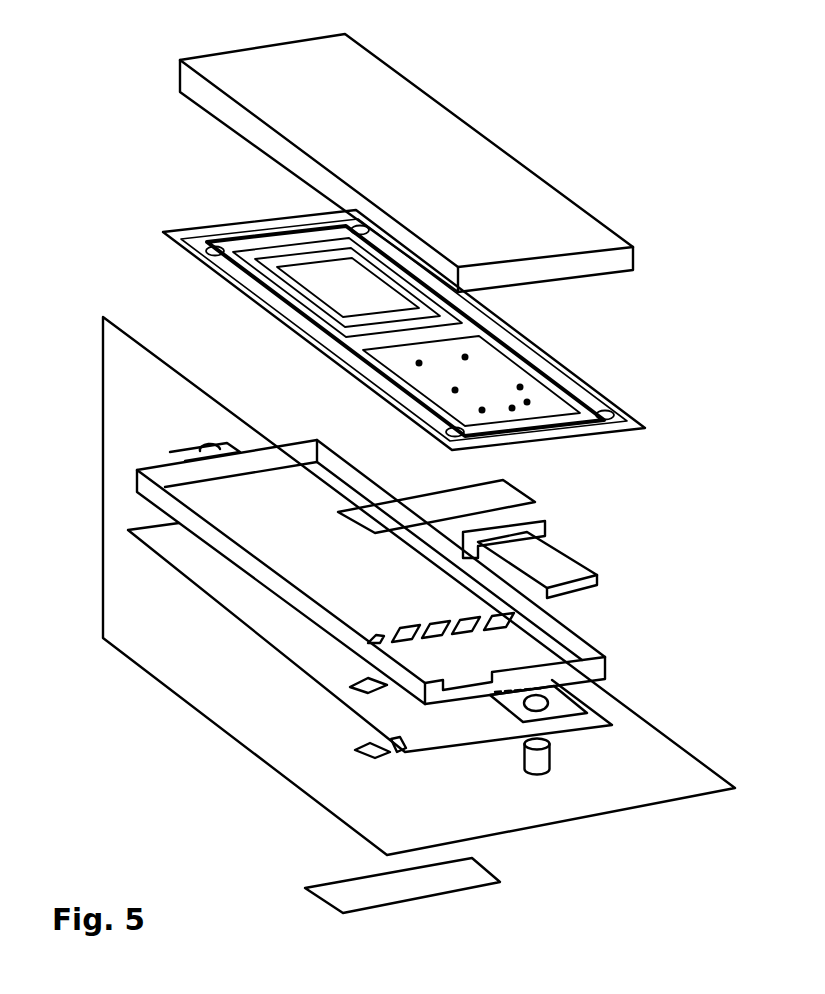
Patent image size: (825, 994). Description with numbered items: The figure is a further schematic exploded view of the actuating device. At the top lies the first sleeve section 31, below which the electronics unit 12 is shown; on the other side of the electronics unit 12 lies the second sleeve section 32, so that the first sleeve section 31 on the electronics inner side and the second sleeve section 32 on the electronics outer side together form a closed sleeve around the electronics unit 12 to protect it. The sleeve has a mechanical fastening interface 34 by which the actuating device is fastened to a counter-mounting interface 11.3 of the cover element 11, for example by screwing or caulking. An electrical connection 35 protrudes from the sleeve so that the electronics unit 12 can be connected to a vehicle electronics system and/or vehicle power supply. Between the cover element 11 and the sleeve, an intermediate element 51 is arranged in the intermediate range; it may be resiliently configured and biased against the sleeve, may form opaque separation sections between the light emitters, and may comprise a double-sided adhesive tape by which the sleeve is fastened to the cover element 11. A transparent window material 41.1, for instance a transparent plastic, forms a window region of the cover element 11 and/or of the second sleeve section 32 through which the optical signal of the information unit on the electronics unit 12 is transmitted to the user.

The cover element 11 is at (642, 782).
The counter-mounting interface 11.3 is at (548, 758).
The electronics unit 12 is at (598, 378).
The first sleeve section 31 is at (478, 207).
The second sleeve section 32 is at (532, 650).
The mechanical fastening interface 34 is at (194, 452).
The electrical connection 35 is at (567, 569).
The transparent window material 41.1 is at (507, 495).
The intermediate element 51 is at (308, 638).